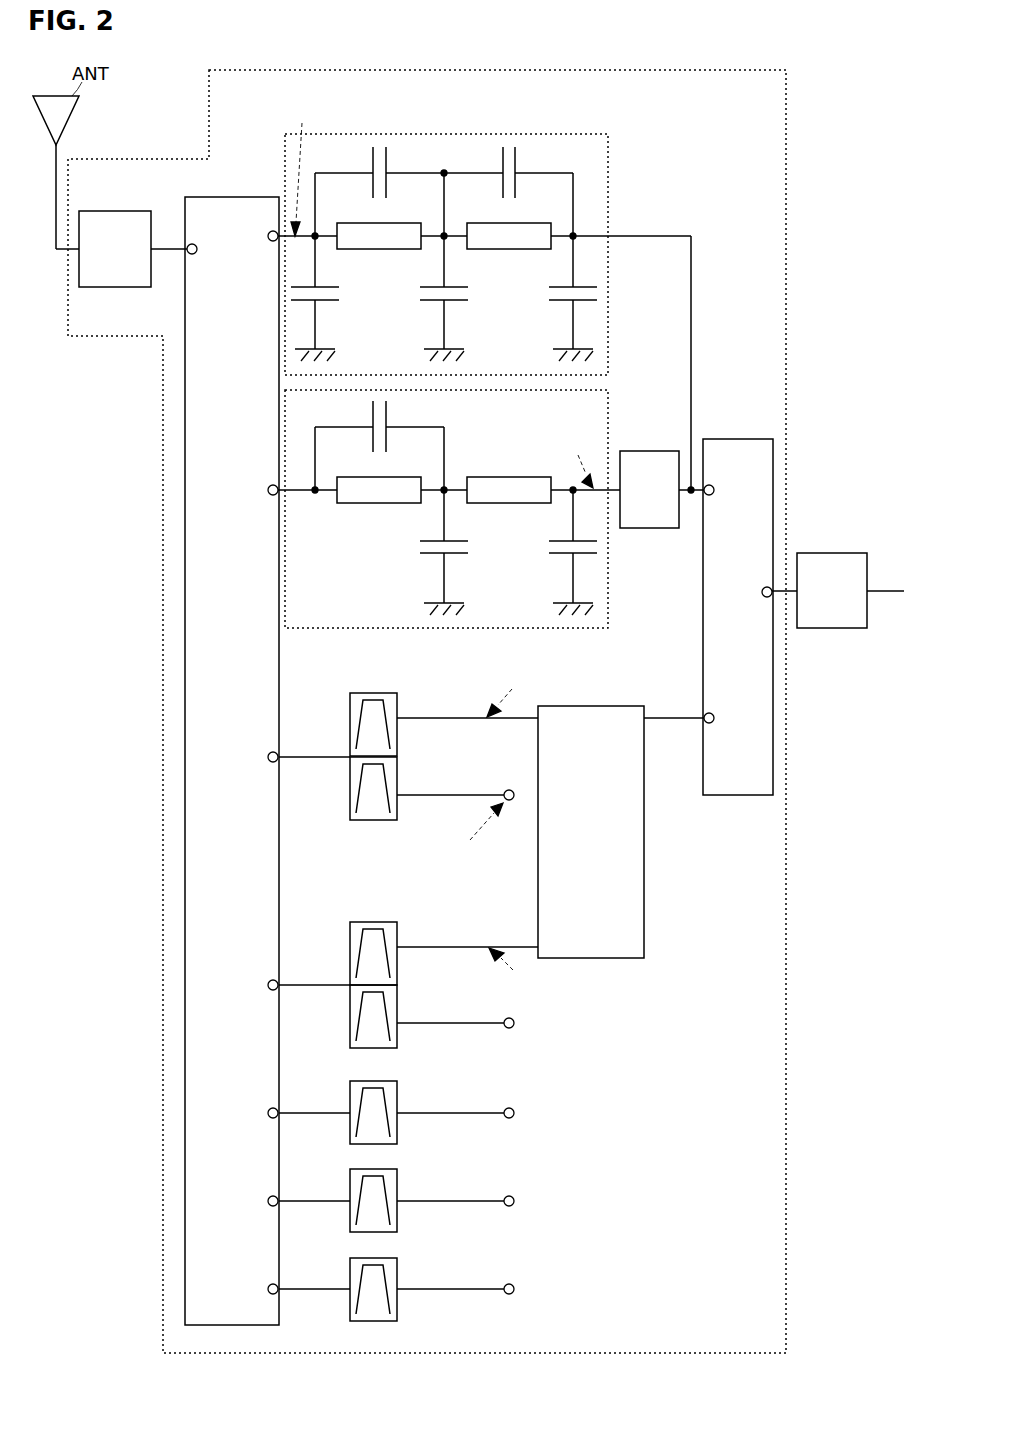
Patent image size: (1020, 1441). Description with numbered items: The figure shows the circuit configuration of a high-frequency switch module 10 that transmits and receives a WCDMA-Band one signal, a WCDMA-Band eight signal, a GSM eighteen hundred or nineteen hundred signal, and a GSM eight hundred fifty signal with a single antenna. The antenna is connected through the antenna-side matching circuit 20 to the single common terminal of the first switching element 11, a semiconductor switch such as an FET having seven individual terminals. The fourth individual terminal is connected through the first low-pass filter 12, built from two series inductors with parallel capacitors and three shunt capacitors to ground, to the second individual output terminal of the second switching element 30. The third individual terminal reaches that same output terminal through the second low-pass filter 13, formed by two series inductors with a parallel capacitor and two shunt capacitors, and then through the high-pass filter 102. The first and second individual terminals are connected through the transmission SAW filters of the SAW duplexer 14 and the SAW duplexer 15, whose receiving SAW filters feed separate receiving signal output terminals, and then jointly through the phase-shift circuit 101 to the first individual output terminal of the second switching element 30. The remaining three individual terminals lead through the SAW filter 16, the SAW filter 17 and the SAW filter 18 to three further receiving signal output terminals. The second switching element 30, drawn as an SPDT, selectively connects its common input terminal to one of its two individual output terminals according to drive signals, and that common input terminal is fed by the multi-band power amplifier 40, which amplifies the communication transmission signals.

The high-frequency switch module 10 is at (752, 70).
The first switching element 11 is at (247, 197).
The first low-pass filter 12 is at (588, 134).
The second low-pass filter 13 is at (595, 628).
The SAW duplexer 14 is at (410, 704).
The SAW duplexer 15 is at (410, 933).
The SAW filter 16 is at (410, 1092).
The SAW filter 17 is at (410, 1180).
The SAW filter 18 is at (410, 1268).
The antenna-side matching circuit 20 is at (133, 211).
The second switching element 30 is at (738, 439).
The multi-band power amplifier 40 is at (852, 541).
The phase-shift circuit 101 is at (630, 706).
The high-pass filter 102 is at (640, 451).